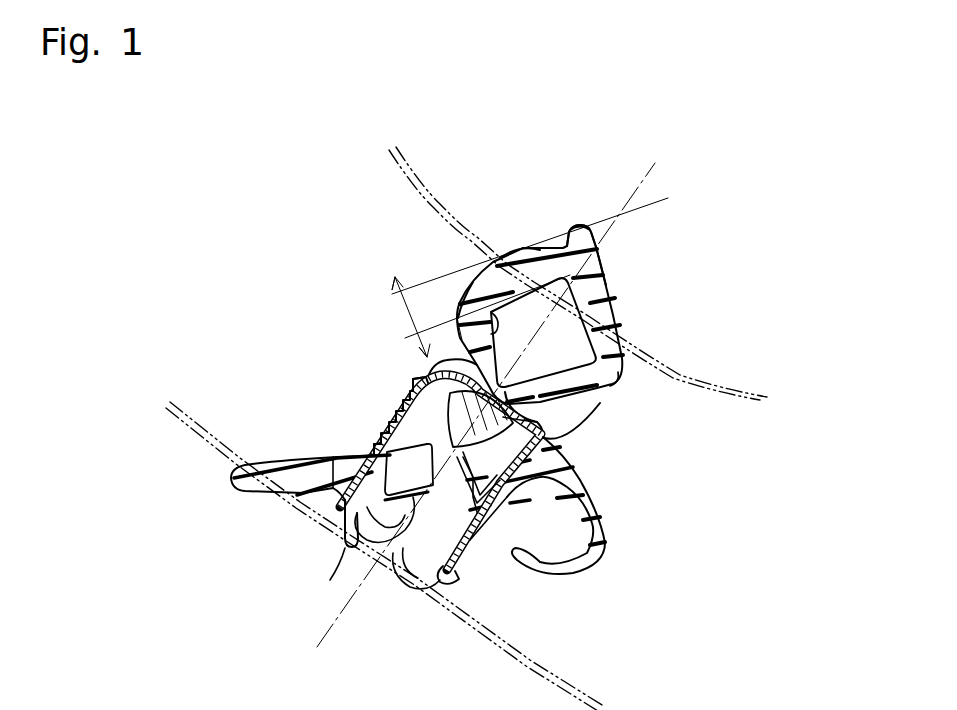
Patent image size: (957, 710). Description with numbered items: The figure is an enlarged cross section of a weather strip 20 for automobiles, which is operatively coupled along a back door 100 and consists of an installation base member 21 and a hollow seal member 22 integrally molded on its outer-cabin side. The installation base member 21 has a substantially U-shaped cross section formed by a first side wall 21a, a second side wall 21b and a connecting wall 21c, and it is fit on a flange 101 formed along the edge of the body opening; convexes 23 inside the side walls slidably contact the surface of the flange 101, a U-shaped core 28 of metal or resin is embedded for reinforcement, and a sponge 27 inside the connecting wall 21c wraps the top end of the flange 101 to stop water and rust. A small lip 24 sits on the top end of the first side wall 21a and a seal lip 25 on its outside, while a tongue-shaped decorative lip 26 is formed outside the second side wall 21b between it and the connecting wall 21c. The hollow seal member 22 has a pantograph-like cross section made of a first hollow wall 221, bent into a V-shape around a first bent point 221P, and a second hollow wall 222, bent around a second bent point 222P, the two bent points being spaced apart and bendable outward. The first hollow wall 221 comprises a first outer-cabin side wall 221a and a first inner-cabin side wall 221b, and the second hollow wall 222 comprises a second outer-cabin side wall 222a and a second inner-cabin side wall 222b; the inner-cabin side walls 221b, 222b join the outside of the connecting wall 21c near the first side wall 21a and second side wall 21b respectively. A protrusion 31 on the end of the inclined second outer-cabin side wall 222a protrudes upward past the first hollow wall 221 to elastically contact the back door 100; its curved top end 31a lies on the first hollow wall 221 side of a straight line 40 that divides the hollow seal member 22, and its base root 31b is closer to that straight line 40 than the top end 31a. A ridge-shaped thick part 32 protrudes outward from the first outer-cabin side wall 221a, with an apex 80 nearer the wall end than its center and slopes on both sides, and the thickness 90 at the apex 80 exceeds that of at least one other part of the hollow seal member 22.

The weather strip 20 is at (643, 446).
The installation base member 21 is at (418, 388).
The first side wall 21a is at (398, 415).
The second side wall 21b is at (473, 552).
The connecting wall 21c is at (530, 412).
The hollow seal member 22 is at (603, 272).
The first hollow wall 221 is at (467, 333).
The first outer-cabin side wall 221a is at (533, 252).
The first inner-cabin side wall 221b is at (445, 362).
The first bent point 221P is at (465, 338).
The second hollow wall 222 is at (622, 326).
The second outer-cabin side wall 222a is at (612, 299).
The second inner-cabin side wall 222b is at (600, 403).
The second bent point 222P is at (615, 383).
The convexes 23 is at (367, 537).
The small lip 24 is at (345, 537).
The seal lip 25 is at (233, 487).
The decorative lip 26 is at (605, 547).
The sponge 27 is at (416, 377).
The core 28 is at (390, 447).
The protrusion 31 is at (598, 237).
The top end 31a is at (583, 224).
The base root 31b is at (607, 238).
The thick part 32 is at (528, 256).
The straight line 40 is at (658, 178).
The apex 80 is at (522, 246).
The thickness 90 is at (403, 299).
The back door 100 is at (667, 373).
The flange 101 is at (550, 463).